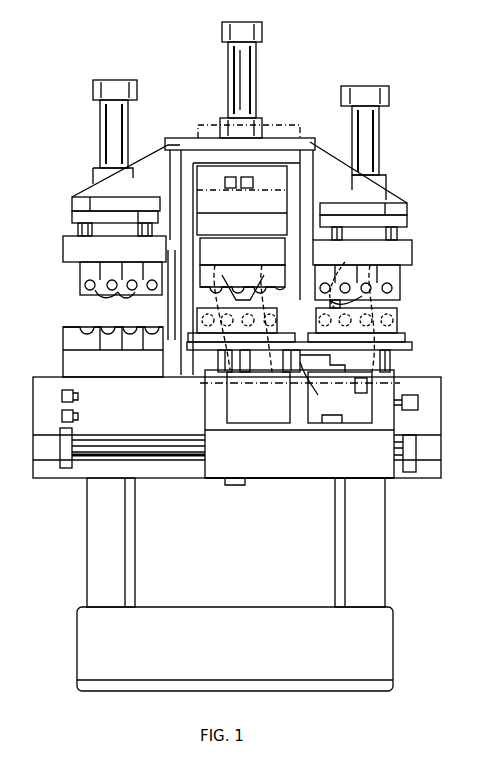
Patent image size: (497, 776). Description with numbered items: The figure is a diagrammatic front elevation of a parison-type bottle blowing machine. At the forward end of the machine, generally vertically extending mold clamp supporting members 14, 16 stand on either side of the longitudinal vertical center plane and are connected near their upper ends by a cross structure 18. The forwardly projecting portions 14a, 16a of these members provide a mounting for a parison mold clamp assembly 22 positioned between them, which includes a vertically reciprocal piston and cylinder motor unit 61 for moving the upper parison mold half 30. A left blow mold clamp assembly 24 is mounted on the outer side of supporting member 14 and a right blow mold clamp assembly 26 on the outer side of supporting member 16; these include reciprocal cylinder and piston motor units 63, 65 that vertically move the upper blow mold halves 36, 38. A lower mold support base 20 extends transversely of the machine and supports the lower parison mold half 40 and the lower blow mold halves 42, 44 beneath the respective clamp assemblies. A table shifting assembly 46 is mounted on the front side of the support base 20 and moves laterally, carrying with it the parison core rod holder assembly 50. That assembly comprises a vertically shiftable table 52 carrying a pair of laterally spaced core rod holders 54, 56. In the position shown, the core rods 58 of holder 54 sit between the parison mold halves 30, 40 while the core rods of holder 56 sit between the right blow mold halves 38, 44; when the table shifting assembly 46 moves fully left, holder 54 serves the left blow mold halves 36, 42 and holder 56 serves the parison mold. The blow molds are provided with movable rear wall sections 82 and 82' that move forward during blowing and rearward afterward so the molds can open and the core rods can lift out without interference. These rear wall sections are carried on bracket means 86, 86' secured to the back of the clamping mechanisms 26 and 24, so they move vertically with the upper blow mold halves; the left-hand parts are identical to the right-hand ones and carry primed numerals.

The piston and cylinder motor unit 61 is at (256, 62).
The cylinder and piston motor unit 63 is at (118, 115).
The cylinder and piston motor unit 65 is at (370, 132).
The parison mold clamp assembly 22 is at (228, 228).
The cross structure 18 is at (262, 142).
The forwardly projecting portion 14a is at (185, 197).
The forwardly projecting portion 16a is at (308, 190).
The left blow mold clamp assembly 24 is at (60, 230).
The right blow mold clamp assembly 26 is at (410, 235).
The upper blow mold half 36 is at (88, 272).
The bracket means 86' is at (83, 290).
The rear wall sections 82' is at (89, 306).
The lower parison mold half 40 is at (196, 322).
The lower blow mold half 42 is at (82, 345).
The core rods 58 is at (295, 330).
The upper parison mold half 30 is at (264, 308).
The core rod holder 54 is at (325, 253).
The rear wall sections 82 is at (380, 275).
The upper blow mold half 38 is at (393, 283).
The bracket means 86 is at (387, 300).
The core rod holder 56 is at (397, 322).
The lower blow mold half 44 is at (406, 337).
The vertically shiftable table 52 is at (395, 352).
The mold clamp supporting member 14 is at (185, 370).
The parison core rod holder assembly 50 is at (224, 400).
The mold clamp supporting member 16 is at (336, 392).
The lower mold support base 20 is at (437, 395).
The table shifting assembly 46 is at (303, 462).